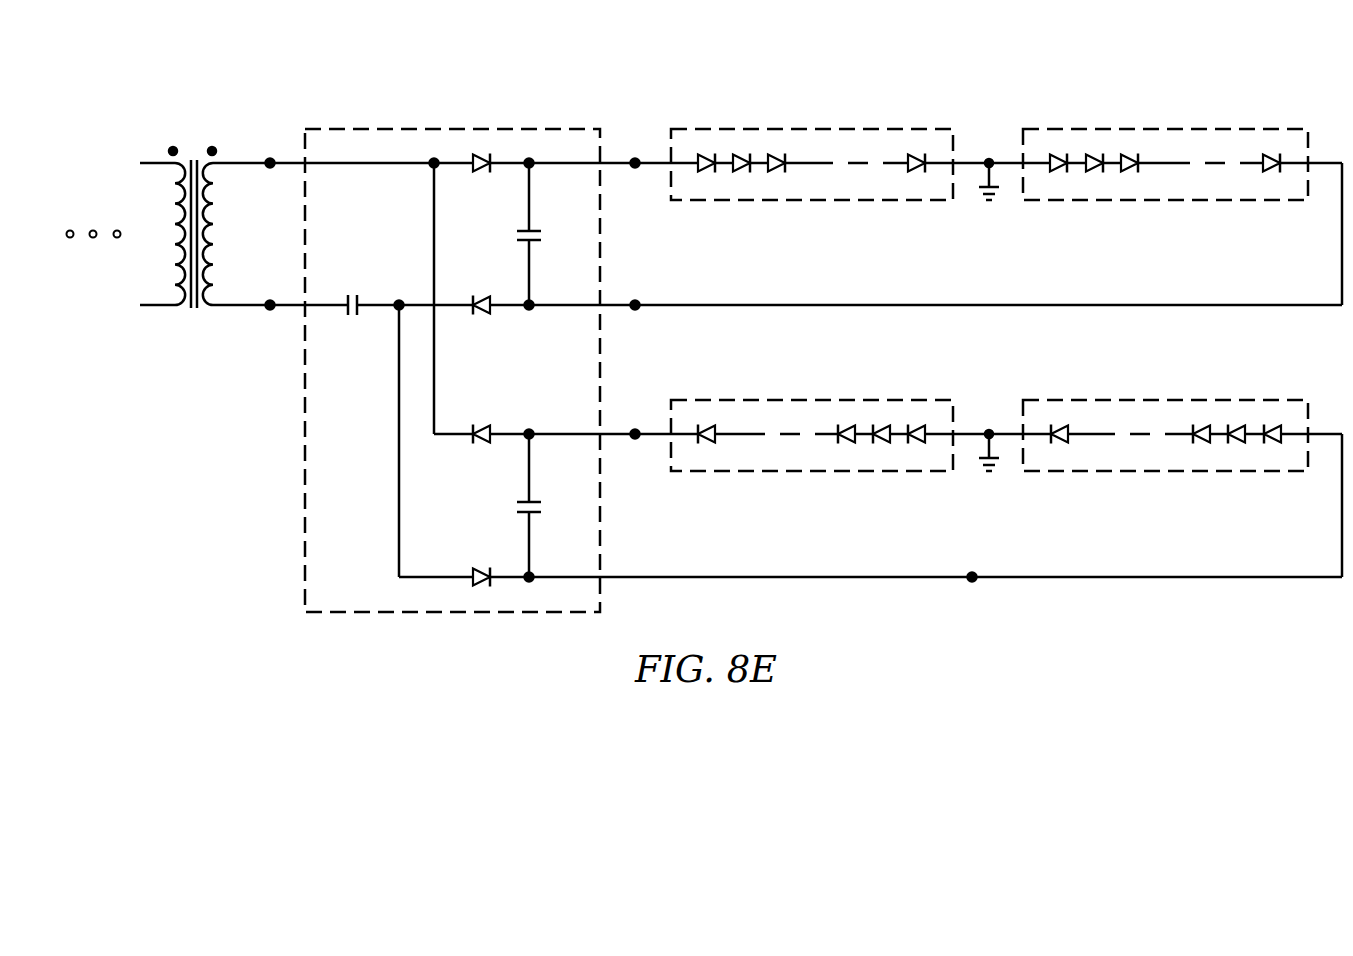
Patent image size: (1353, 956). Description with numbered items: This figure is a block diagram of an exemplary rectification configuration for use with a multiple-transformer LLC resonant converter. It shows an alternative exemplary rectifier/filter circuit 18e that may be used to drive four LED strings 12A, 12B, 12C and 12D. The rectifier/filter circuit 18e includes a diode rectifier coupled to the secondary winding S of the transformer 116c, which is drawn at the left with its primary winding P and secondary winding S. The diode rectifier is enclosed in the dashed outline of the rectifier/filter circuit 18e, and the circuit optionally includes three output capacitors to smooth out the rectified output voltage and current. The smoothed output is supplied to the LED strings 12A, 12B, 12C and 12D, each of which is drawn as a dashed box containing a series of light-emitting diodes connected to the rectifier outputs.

The transformer 116c is at (193, 138).
The rectifier/filter circuit 18e is at (416, 122).
The LED string 12A is at (836, 120).
The LED string 12B is at (1190, 120).
The LED string 12C is at (836, 391).
The LED string 12D is at (1190, 391).